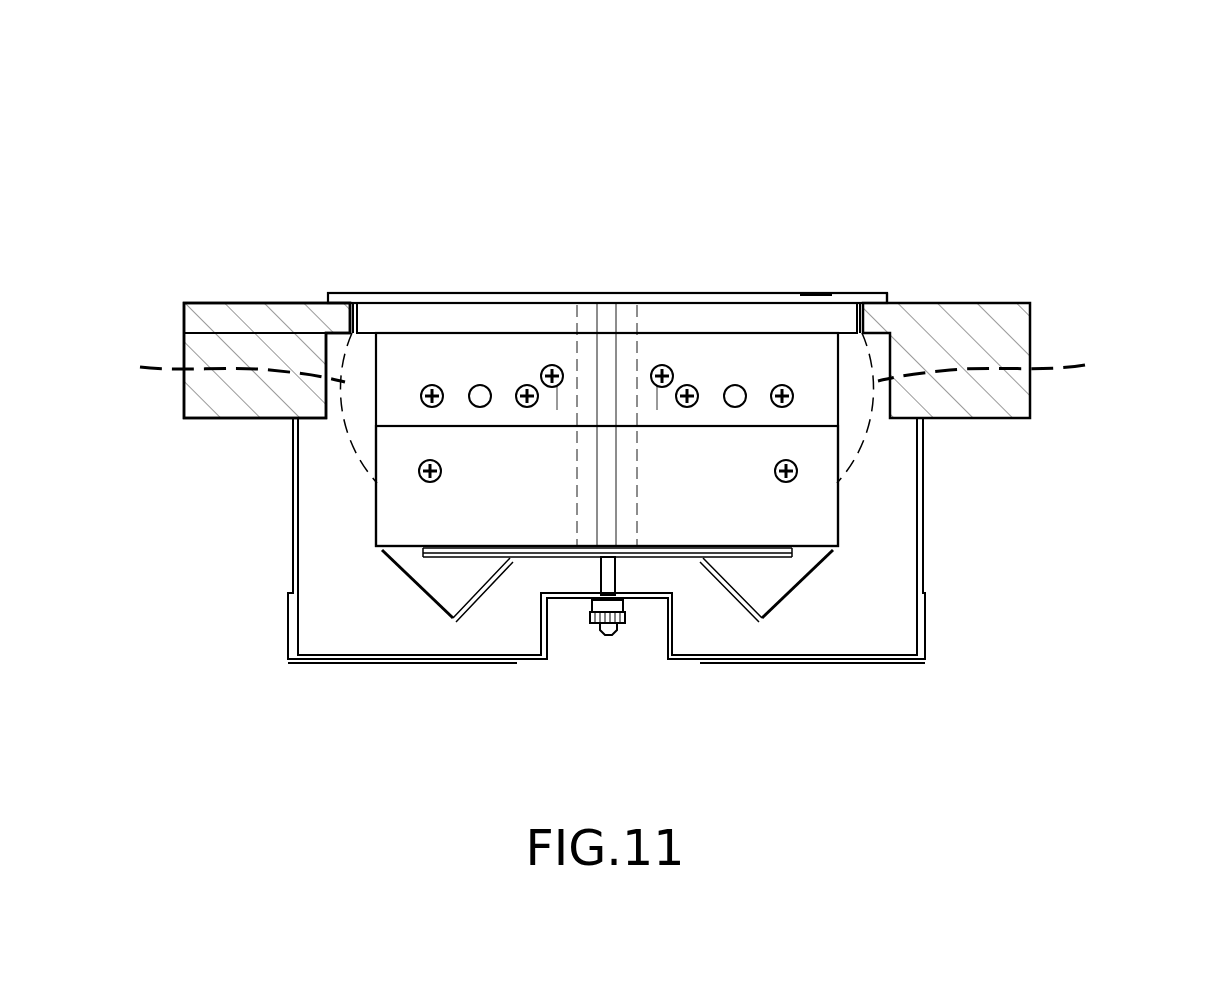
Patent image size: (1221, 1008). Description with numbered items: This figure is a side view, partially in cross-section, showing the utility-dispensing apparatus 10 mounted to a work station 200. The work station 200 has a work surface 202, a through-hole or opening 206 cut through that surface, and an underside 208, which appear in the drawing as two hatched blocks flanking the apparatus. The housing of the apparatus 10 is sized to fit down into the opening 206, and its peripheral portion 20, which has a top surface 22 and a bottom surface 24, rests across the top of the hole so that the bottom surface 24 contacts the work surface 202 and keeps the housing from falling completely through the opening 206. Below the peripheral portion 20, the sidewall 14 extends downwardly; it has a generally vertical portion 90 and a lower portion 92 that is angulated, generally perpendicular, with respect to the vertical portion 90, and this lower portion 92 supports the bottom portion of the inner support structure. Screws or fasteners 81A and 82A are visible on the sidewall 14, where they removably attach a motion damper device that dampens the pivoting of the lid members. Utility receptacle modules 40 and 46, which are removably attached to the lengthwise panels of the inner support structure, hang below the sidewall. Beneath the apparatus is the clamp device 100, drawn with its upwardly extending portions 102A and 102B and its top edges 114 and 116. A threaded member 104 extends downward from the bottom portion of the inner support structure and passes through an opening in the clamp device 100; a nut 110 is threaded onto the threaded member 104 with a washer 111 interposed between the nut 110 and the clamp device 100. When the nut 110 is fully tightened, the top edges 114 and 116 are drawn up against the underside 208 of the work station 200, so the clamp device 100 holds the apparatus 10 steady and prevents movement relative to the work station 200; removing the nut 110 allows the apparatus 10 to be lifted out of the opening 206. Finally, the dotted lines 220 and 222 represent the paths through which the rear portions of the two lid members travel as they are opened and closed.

The apparatus 10 is at (416, 293).
The top surface 22 is at (480, 293).
The peripheral portion 20 is at (815, 293).
The bottom surface 24 is at (877, 312).
The sidewall 14 is at (594, 378).
The fastener 81A is at (688, 386).
The fastener 82A is at (784, 386).
The opening 206 is at (858, 328).
The work station 200 is at (205, 303).
The work surface 202 is at (254, 303).
The underside 208 is at (1015, 418).
The dotted line 220 is at (1007, 365).
The dotted line 222 is at (217, 367).
The clamp device 100 is at (290, 663).
The top edge 114 is at (298, 425).
The top edge 116 is at (917, 476).
The upwardly extending portion 102A is at (925, 557).
The upwardly extending portion 102B is at (293, 577).
The lower portion 92 is at (752, 553).
The generally vertical portion 90 is at (530, 510).
The utility receptacle module 46 is at (432, 597).
The utility receptacle module 40 is at (787, 597).
The threaded member 104 is at (602, 572).
The nut 110 is at (592, 623).
The washer 111 is at (623, 610).